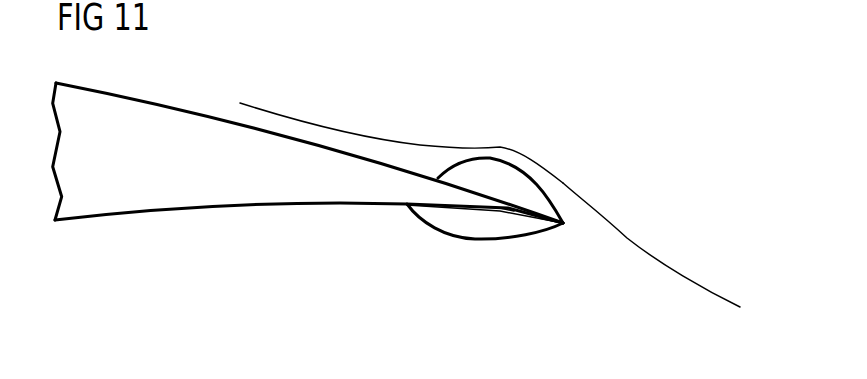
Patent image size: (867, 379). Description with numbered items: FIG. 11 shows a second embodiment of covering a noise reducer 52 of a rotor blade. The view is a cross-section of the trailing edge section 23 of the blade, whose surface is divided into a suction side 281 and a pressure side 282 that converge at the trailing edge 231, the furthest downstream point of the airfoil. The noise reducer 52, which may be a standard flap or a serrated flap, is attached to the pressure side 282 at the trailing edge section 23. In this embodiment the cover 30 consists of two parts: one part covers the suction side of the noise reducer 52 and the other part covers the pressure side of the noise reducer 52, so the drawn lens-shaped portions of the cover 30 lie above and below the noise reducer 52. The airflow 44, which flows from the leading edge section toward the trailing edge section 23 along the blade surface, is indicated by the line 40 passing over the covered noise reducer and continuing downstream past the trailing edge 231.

The trailing edge section 23 is at (355, 168).
The suction side 281 is at (188, 112).
The pressure side 282 is at (280, 205).
The trailing edge 231 is at (565, 224).
The cover 30 is at (490, 173).
The noise reducer 52 is at (507, 208).
The flow direction 40 is at (332, 122).
The airflow 44 is at (602, 212).